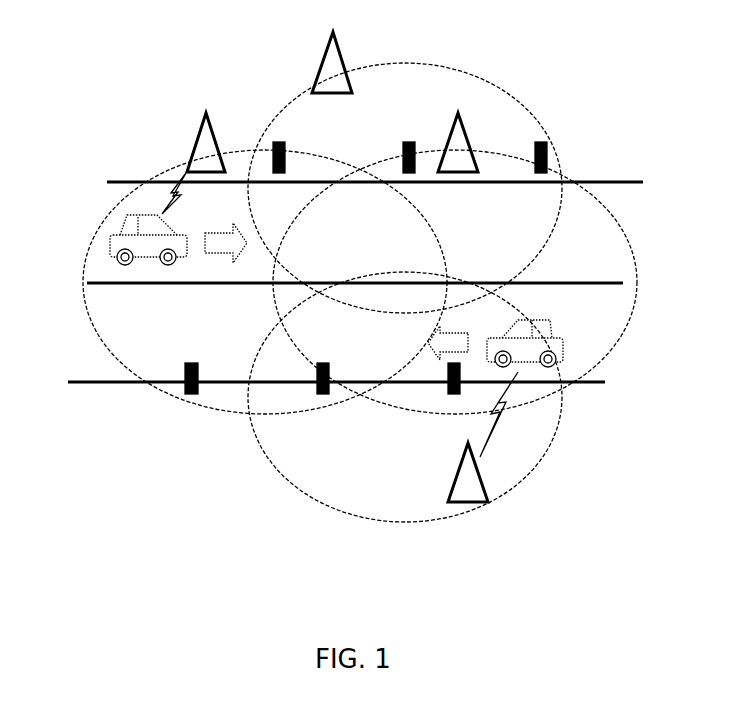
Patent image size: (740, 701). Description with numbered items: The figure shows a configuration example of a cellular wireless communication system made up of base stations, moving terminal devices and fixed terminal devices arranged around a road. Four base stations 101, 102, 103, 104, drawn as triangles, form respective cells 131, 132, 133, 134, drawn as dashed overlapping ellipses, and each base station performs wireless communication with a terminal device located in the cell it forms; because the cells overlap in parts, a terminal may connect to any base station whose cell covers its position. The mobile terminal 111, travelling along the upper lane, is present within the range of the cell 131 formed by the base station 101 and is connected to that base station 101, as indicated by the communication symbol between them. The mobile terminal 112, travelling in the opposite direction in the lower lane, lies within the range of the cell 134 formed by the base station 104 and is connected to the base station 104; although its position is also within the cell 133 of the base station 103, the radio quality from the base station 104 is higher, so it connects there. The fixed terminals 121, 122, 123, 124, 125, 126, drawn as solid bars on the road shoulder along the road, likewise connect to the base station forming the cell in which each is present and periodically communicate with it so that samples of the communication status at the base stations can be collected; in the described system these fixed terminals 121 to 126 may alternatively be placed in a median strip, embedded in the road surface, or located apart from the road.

The base station 101 is at (203, 140).
The base station 102 is at (328, 67).
The base station 103 is at (457, 147).
The base station 104 is at (463, 493).
The mobile terminal 111 is at (117, 247).
The mobile terminal 112 is at (560, 350).
The fixed terminal 121 is at (277, 143).
The fixed terminal 122 is at (410, 142).
The fixed terminal 123 is at (548, 170).
The fixed terminal 124 is at (192, 395).
The fixed terminal 125 is at (320, 395).
The fixed terminal 126 is at (447, 395).
The cell 131 is at (83, 290).
The cell 132 is at (457, 63).
The cell 133 is at (633, 250).
The cell 134 is at (300, 497).